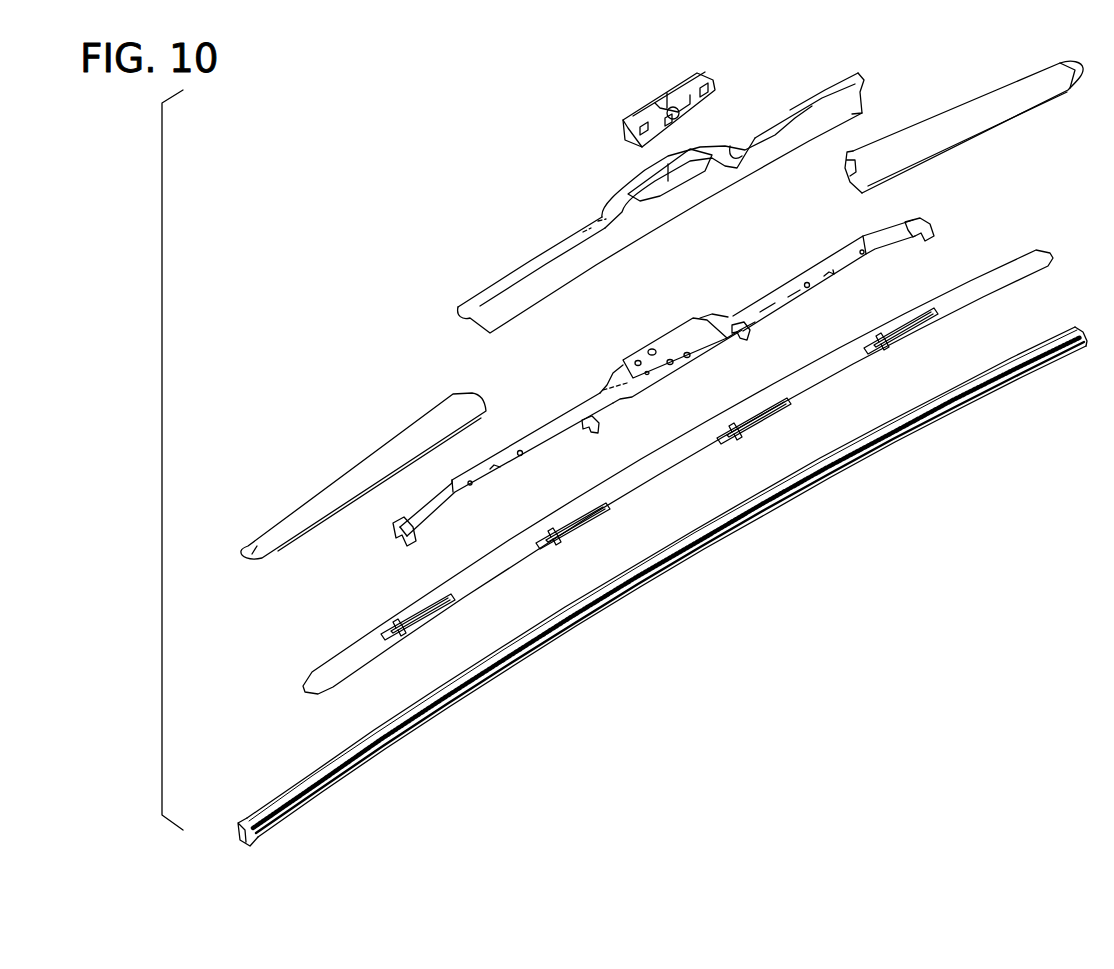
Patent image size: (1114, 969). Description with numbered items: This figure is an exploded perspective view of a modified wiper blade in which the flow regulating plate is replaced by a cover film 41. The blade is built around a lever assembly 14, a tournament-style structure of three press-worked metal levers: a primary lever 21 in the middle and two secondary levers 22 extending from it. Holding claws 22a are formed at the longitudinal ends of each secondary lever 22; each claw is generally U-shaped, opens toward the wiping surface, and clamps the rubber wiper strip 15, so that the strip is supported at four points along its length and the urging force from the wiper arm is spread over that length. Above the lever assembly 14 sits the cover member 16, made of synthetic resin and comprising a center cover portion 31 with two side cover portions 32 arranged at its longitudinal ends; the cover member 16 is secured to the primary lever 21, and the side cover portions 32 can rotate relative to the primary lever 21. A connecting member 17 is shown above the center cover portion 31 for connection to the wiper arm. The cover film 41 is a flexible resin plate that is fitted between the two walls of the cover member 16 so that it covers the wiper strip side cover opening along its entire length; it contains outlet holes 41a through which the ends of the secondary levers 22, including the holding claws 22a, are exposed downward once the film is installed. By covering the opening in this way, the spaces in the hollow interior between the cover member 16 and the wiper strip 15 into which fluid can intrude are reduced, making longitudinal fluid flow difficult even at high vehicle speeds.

The lever assembly 14 is at (755, 281).
The wiper strip 15 is at (1008, 363).
The cover member 16 is at (438, 381).
The connecting member 17 is at (677, 77).
The primary lever 21 is at (661, 336).
The secondary lever 22 is at (895, 243).
The holding claw 22a is at (935, 232).
The center cover portion 31 is at (536, 262).
The side cover portion 32 is at (934, 114).
The cover film 41 is at (1021, 243).
The outlet hole 41a is at (884, 346).